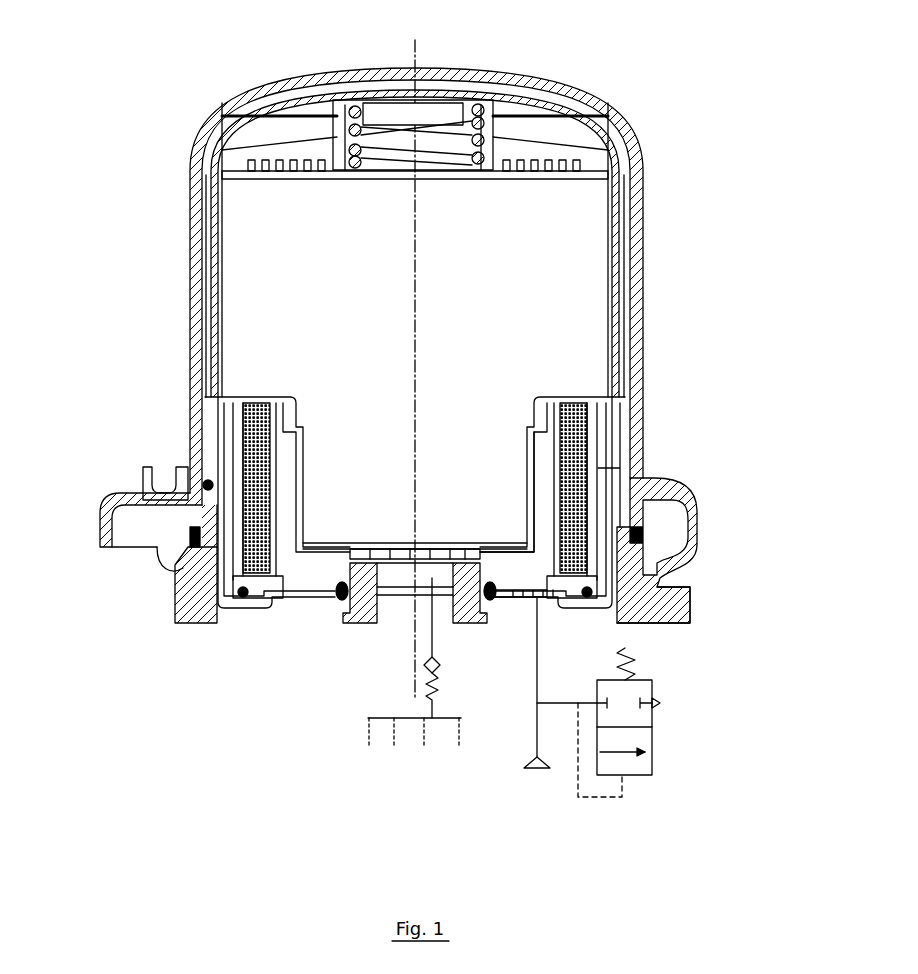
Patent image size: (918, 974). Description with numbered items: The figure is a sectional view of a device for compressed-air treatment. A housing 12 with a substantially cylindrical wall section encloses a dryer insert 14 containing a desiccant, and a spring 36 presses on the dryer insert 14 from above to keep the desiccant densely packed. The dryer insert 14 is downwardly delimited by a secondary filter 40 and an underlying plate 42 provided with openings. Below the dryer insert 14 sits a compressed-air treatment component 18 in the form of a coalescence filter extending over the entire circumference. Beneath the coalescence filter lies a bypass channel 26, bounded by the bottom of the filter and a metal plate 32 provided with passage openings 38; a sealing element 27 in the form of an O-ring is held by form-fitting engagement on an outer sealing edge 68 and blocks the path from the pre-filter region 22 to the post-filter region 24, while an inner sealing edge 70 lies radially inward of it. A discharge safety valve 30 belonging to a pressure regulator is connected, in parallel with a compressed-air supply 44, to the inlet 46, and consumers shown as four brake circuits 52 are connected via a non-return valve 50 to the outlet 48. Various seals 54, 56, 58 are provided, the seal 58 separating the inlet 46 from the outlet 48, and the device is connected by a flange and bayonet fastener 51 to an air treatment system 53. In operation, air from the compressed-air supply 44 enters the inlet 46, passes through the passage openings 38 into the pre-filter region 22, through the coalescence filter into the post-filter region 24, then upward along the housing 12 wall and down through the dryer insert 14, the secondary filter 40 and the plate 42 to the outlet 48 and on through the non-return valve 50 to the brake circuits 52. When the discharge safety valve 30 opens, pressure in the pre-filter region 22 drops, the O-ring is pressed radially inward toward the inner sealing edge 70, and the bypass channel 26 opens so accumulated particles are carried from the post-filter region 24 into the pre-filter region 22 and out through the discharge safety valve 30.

The housing 12 is at (648, 238).
The dryer insert 14 is at (620, 182).
The compressed-air treatment component 18 is at (578, 440).
The pre-filter region 22 is at (657, 585).
The post-filter region 24 is at (630, 450).
The bypass channel 26 is at (581, 600).
The sealing element 27 is at (243, 600).
The discharge safety valve 30 is at (655, 703).
The metal plate 32 is at (597, 613).
The spring 36 is at (448, 140).
The passage openings 38 is at (522, 598).
The secondary filter 40 is at (406, 580).
The plate provided with openings 42 is at (437, 560).
The compressed-air supply 44 is at (536, 696).
The inlet 46 is at (548, 600).
The outlet 48 is at (427, 588).
The non-return valve 50 is at (441, 666).
The flange and bayonet fastener 51 is at (700, 522).
The brake circuits 52 is at (414, 748).
The air treatment system 53 is at (200, 610).
The seal 54 is at (206, 483).
The seal 56 is at (165, 535).
The seal 58 is at (338, 598).
The outer sealing edge 68 is at (658, 596).
The inner sealing edge 70 is at (534, 582).